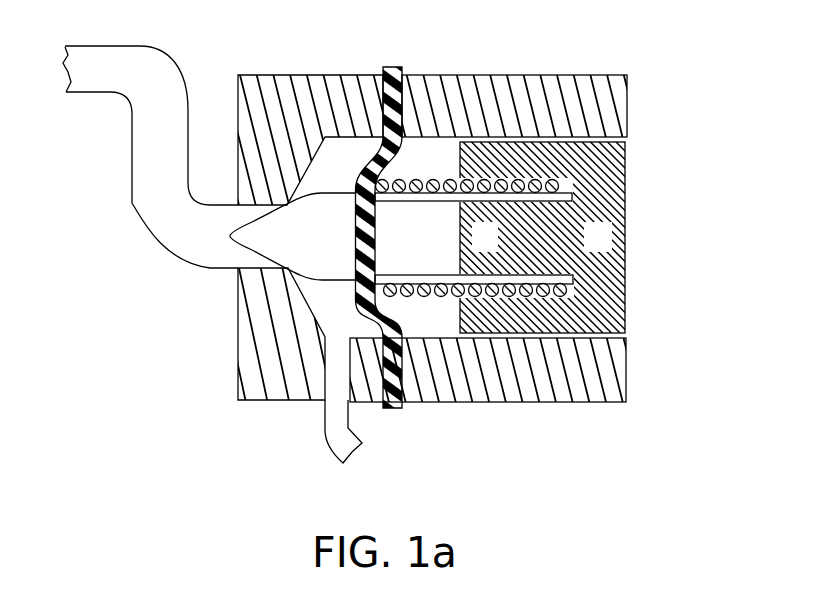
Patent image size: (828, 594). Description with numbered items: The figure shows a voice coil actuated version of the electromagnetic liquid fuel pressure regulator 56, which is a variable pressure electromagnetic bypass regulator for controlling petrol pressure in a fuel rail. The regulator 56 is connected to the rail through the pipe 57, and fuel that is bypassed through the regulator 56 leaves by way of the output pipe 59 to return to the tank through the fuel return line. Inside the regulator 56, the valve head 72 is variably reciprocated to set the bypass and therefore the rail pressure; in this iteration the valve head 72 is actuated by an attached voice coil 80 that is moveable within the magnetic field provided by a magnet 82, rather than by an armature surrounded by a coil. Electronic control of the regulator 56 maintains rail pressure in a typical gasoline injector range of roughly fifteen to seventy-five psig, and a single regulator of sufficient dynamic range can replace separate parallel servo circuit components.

The electromagnetic liquid fuel pressure regulator 56 is at (627, 91).
The pipe 57 is at (357, 428).
The output pipe 59 is at (132, 203).
The valve head 72 is at (334, 247).
The coil 80 is at (413, 179).
The permanent magnet 82 is at (625, 230).